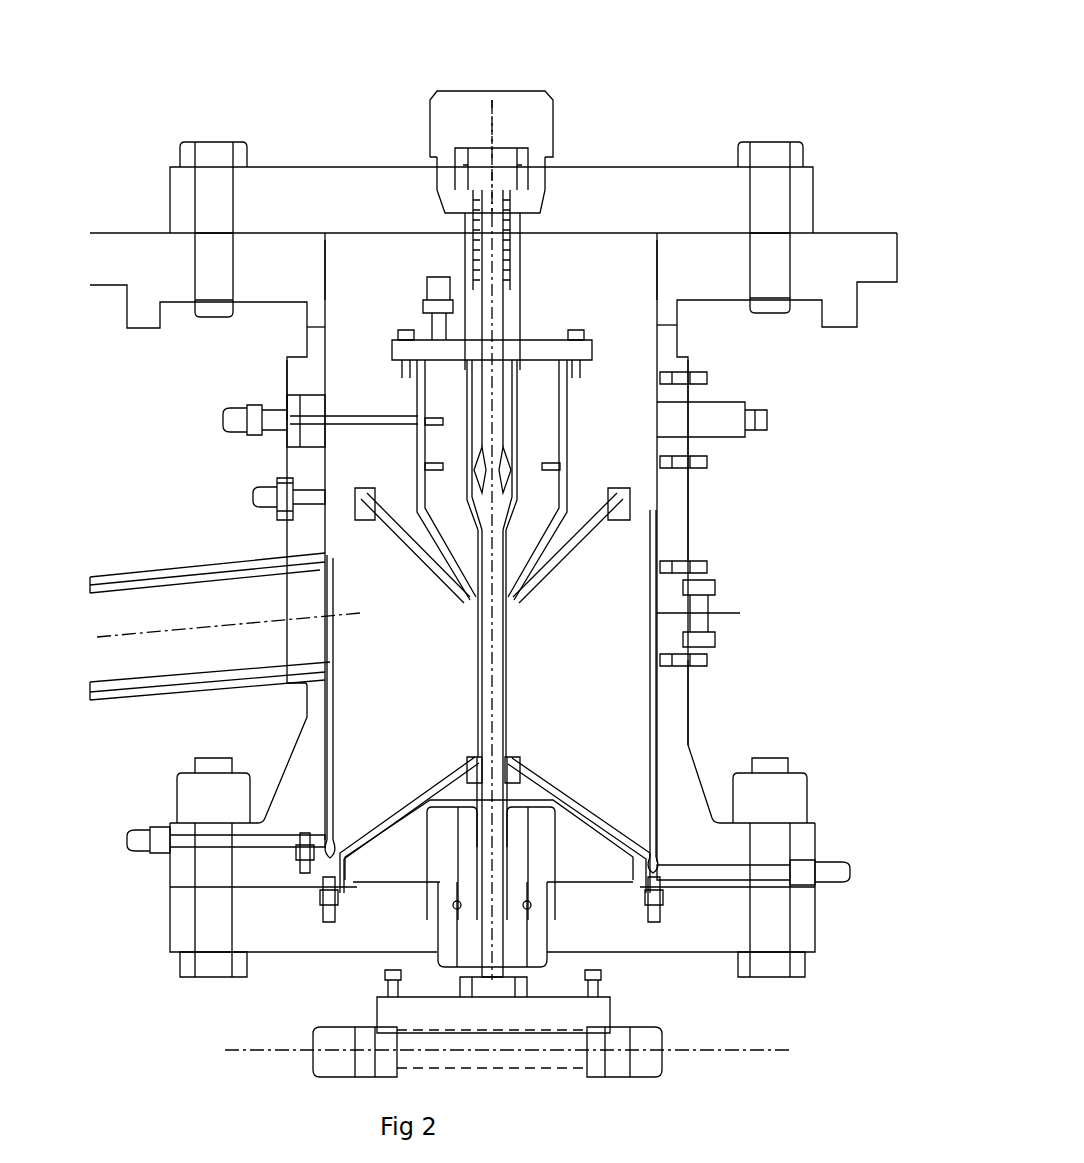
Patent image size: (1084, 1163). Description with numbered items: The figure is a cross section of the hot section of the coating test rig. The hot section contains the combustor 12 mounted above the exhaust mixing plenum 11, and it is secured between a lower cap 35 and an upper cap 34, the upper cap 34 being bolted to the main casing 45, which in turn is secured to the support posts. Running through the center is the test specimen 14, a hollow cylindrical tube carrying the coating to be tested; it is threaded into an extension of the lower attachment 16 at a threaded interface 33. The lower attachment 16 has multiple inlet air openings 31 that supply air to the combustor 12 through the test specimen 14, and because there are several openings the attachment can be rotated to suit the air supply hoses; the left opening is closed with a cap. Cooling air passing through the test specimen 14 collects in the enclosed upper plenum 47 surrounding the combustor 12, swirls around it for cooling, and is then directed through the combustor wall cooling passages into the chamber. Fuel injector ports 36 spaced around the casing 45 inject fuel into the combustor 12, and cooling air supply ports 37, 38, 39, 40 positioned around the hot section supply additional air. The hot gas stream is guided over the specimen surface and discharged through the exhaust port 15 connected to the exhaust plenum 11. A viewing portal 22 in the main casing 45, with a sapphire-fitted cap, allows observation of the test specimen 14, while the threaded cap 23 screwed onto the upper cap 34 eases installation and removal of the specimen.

The exhaust mixing plenum 11 is at (593, 743).
The combustor 12 is at (532, 387).
The test specimen 14 is at (505, 675).
The exhaust port 15 is at (137, 660).
The lower attachment 16 is at (508, 1060).
The viewing portal 22 is at (703, 607).
The threaded cap 23 is at (459, 113).
The inlet air openings 31 is at (350, 1052).
The threaded interface 33 is at (478, 820).
The upper cap 34 is at (322, 190).
The lower cap 35 is at (708, 925).
The fuel injector ports 36 is at (217, 420).
The cooling air supply port 37 is at (247, 495).
The cooling air supply port 38 is at (853, 873).
The cooling air supply port 39 is at (757, 427).
The cooling air supply port 40 is at (140, 848).
The main casing 45 is at (672, 515).
The upper plenum 47 is at (600, 280).